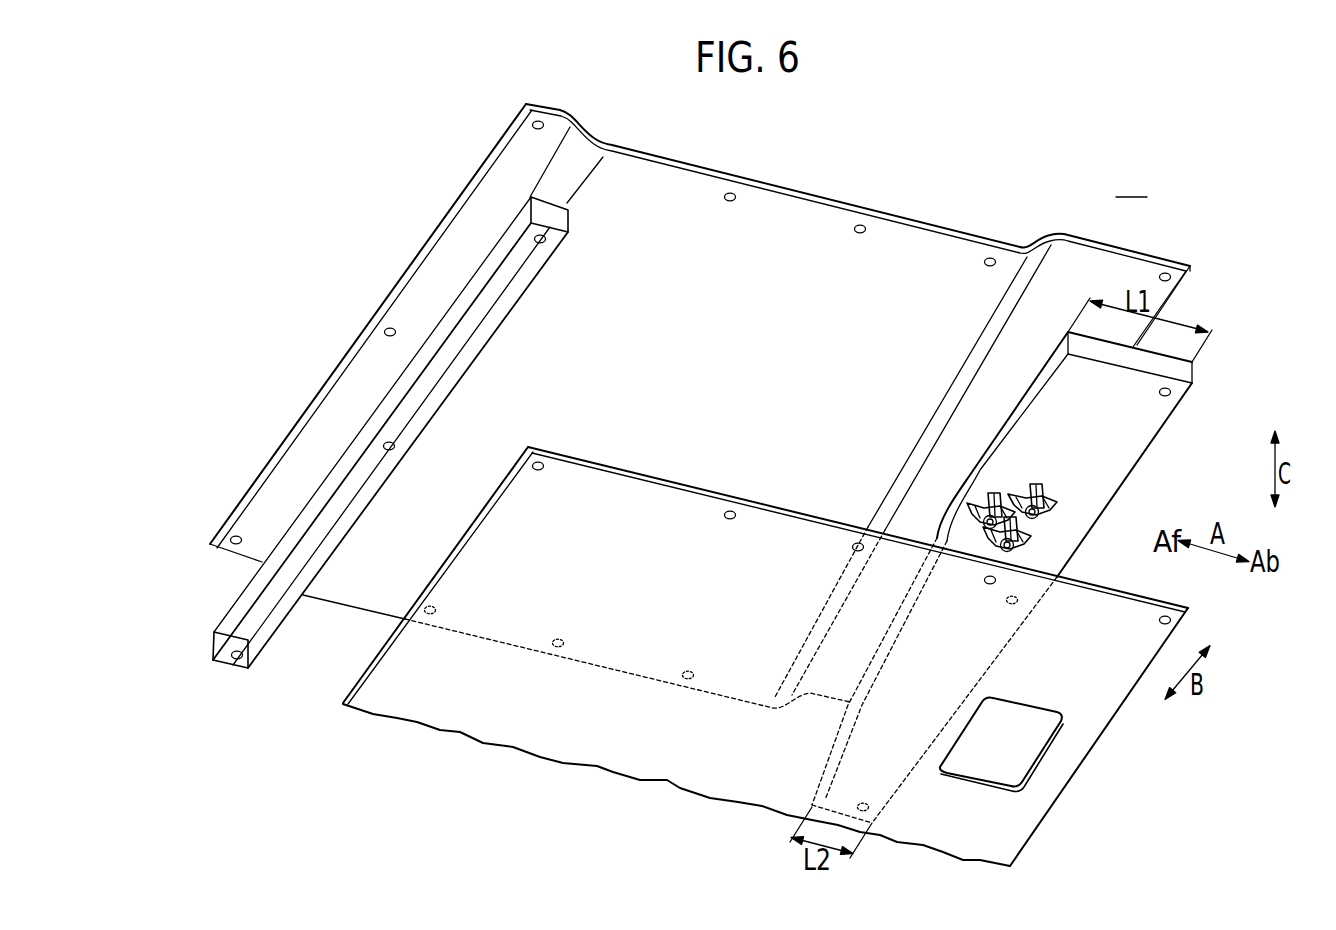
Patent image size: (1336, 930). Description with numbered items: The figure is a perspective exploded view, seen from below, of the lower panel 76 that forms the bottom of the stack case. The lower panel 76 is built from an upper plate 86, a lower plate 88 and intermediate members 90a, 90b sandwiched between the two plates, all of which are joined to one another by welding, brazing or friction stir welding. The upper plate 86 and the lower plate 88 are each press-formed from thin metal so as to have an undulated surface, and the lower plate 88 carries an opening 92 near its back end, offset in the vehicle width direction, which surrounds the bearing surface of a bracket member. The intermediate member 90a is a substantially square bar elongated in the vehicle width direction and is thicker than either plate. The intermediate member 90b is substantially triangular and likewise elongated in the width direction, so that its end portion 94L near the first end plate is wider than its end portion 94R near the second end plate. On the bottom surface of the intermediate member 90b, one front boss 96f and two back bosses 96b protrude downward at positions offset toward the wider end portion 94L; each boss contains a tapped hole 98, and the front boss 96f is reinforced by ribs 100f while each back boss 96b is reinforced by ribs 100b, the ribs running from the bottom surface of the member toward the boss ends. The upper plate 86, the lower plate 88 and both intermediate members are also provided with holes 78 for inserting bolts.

The lower panel 76 is at (700, 406).
The holes 78 is at (737, 197).
The upper plate 86 is at (1200, 256).
The lower plate 88 is at (1202, 602).
The intermediate member 90a is at (221, 682).
The intermediate member 90b is at (1206, 368).
The opening 92 is at (1040, 772).
The end portion 94L is at (1127, 408).
The end portion 94R is at (843, 770).
The front boss 96f is at (988, 505).
The back bosses 96b is at (1036, 488).
The tapped hole 98 is at (1040, 516).
The ribs 100f is at (976, 519).
The ribs 100b is at (1058, 503).